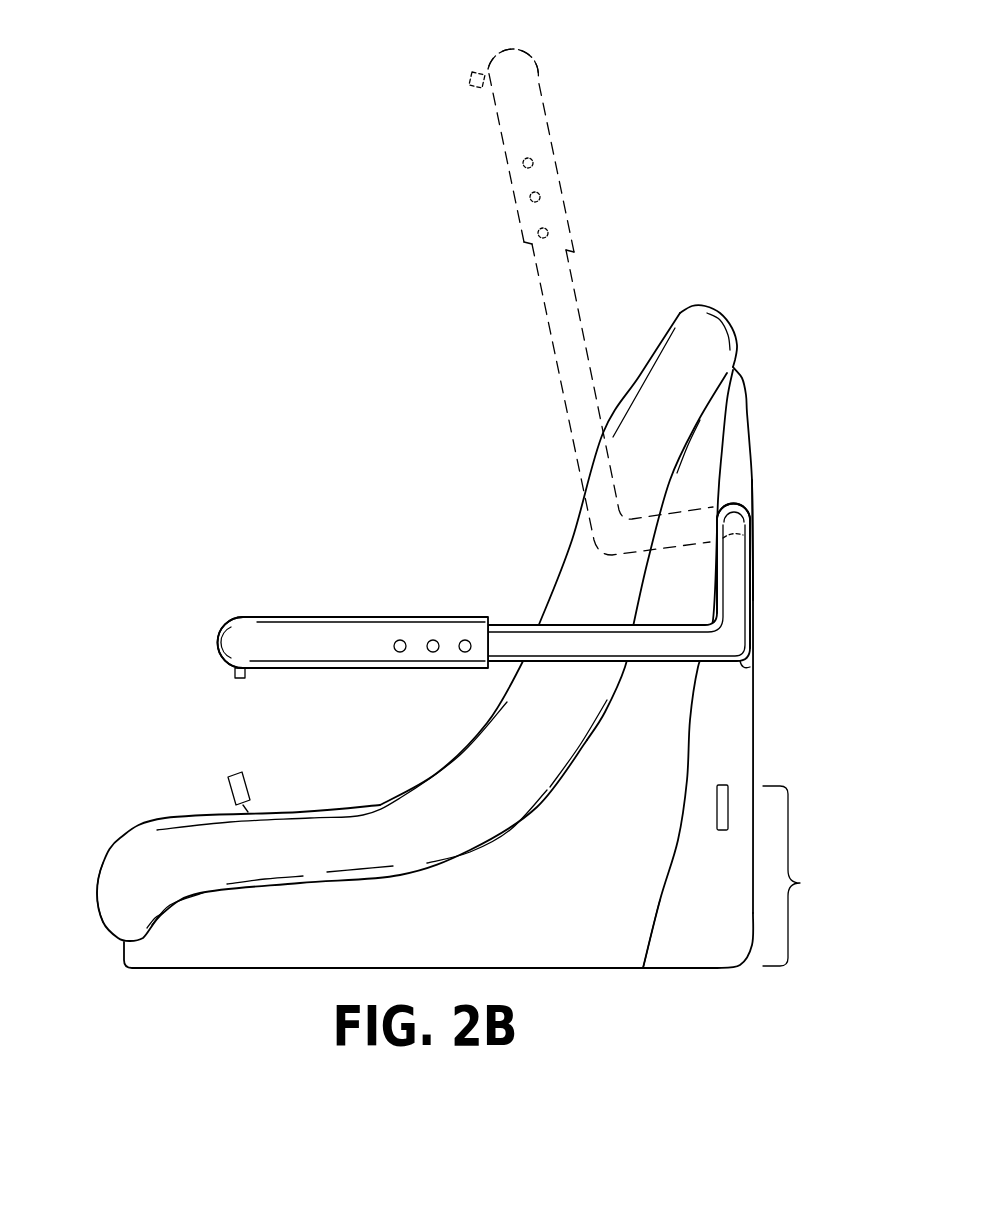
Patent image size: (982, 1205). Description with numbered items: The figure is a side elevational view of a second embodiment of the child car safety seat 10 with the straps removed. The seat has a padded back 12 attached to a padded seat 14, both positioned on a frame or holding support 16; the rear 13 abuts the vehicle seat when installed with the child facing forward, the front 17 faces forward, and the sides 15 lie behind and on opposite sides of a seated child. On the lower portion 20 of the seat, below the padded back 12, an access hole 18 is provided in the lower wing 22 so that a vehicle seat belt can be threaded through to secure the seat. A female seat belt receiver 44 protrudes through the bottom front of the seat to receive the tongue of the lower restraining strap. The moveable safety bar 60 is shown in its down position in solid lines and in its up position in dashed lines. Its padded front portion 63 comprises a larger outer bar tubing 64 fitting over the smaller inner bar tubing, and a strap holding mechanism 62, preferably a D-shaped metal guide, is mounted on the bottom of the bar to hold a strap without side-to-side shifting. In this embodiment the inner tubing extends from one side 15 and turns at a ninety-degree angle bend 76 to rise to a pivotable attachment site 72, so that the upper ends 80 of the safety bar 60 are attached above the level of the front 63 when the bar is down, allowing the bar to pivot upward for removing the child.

The child car safety seat 10 is at (439, 623).
The padded back 12 is at (573, 543).
The rear 13 is at (757, 500).
The padded seat 14 is at (295, 810).
The sides 15 is at (651, 794).
The frame or holding support 16 is at (690, 747).
The front 17 is at (95, 905).
The access hole 18 is at (720, 812).
The lower portion 20 is at (797, 876).
The lower wing 22 is at (737, 947).
The female seat belt receiver 44 is at (230, 790).
The safety bar 60 is at (489, 374).
The strap holding mechanism 62 is at (240, 683).
The padded front portion 63 is at (220, 637).
The outer bar tubing 64 is at (288, 617).
The pivotable attachment site 72 is at (738, 500).
The ninety-degree angle bend 76 is at (750, 668).
The upper ends 80 is at (745, 503).